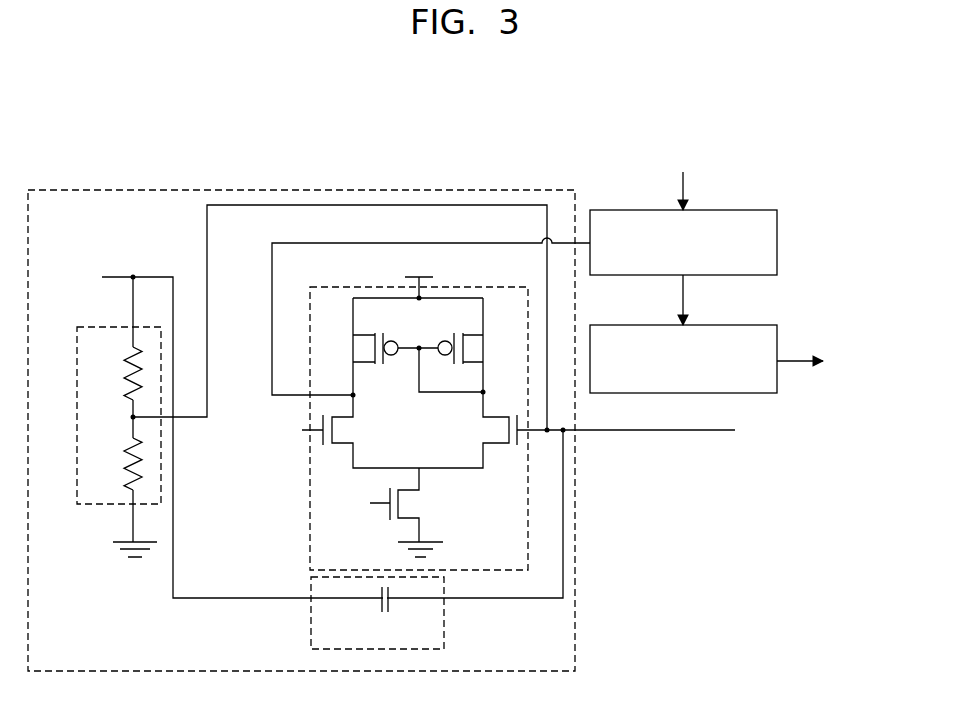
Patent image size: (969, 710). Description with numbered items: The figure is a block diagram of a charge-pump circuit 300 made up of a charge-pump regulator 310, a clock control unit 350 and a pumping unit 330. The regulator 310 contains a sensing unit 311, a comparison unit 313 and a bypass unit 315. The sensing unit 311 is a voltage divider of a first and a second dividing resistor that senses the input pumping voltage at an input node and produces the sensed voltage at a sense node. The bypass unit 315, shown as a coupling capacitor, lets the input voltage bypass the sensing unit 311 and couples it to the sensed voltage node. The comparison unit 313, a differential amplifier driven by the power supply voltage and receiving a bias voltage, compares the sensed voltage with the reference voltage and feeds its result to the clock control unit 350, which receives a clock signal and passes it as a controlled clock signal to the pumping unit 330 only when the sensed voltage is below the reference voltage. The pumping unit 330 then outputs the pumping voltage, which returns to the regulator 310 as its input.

The charge-pump circuit 300 is at (782, 135).
The charge-pump regulator 310 is at (330, 190).
The sensing unit 311 is at (81, 505).
The comparison unit 313 is at (310, 522).
The bypass unit 315 is at (311, 630).
The pumping unit 330 is at (777, 378).
The clock control unit 350 is at (777, 223).